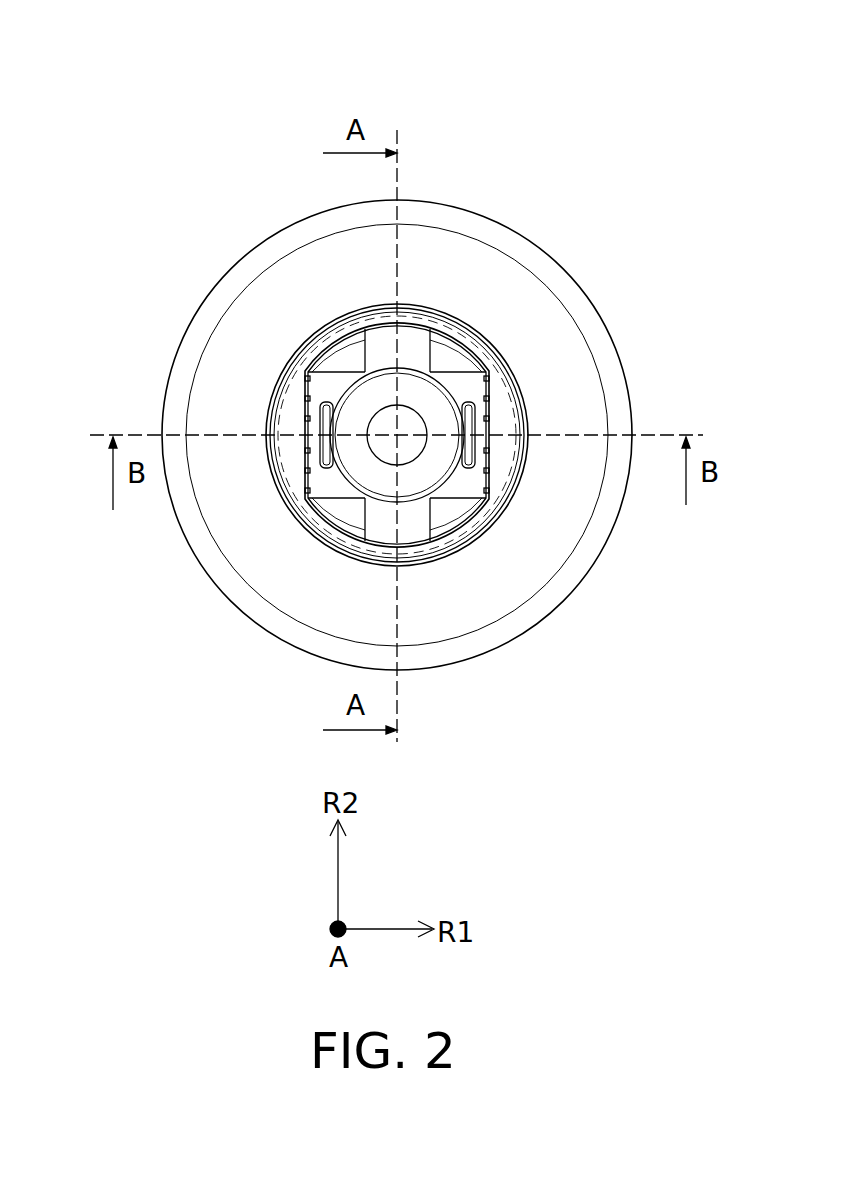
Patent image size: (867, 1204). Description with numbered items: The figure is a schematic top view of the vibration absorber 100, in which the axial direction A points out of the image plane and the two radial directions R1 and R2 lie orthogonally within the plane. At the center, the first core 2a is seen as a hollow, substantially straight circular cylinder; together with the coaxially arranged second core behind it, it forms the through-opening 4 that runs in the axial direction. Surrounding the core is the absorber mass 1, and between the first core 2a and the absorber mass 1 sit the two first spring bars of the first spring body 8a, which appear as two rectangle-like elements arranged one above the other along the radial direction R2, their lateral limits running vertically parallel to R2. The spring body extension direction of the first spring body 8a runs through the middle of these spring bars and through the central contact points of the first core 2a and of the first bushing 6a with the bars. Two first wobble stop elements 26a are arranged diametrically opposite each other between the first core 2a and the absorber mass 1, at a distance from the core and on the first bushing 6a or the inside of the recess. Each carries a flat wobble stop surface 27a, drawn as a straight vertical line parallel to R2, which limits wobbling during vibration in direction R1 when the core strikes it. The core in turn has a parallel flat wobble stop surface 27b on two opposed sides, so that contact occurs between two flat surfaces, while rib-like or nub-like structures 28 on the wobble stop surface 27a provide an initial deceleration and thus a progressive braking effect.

The vibration absorber 100 is at (418, 23).
The absorber mass 1 is at (465, 277).
The first core 2a is at (422, 475).
The through-opening 4 is at (408, 427).
The first bushing 6a is at (528, 410).
The first spring body 8a is at (392, 345).
The first wobble stop element 26a is at (502, 457).
The wobble stop surface of the wobble stop element 27a is at (307, 450).
The wobble stop surface of the core 27b is at (471, 430).
The rib-like or nub-like structures 28 is at (306, 418).